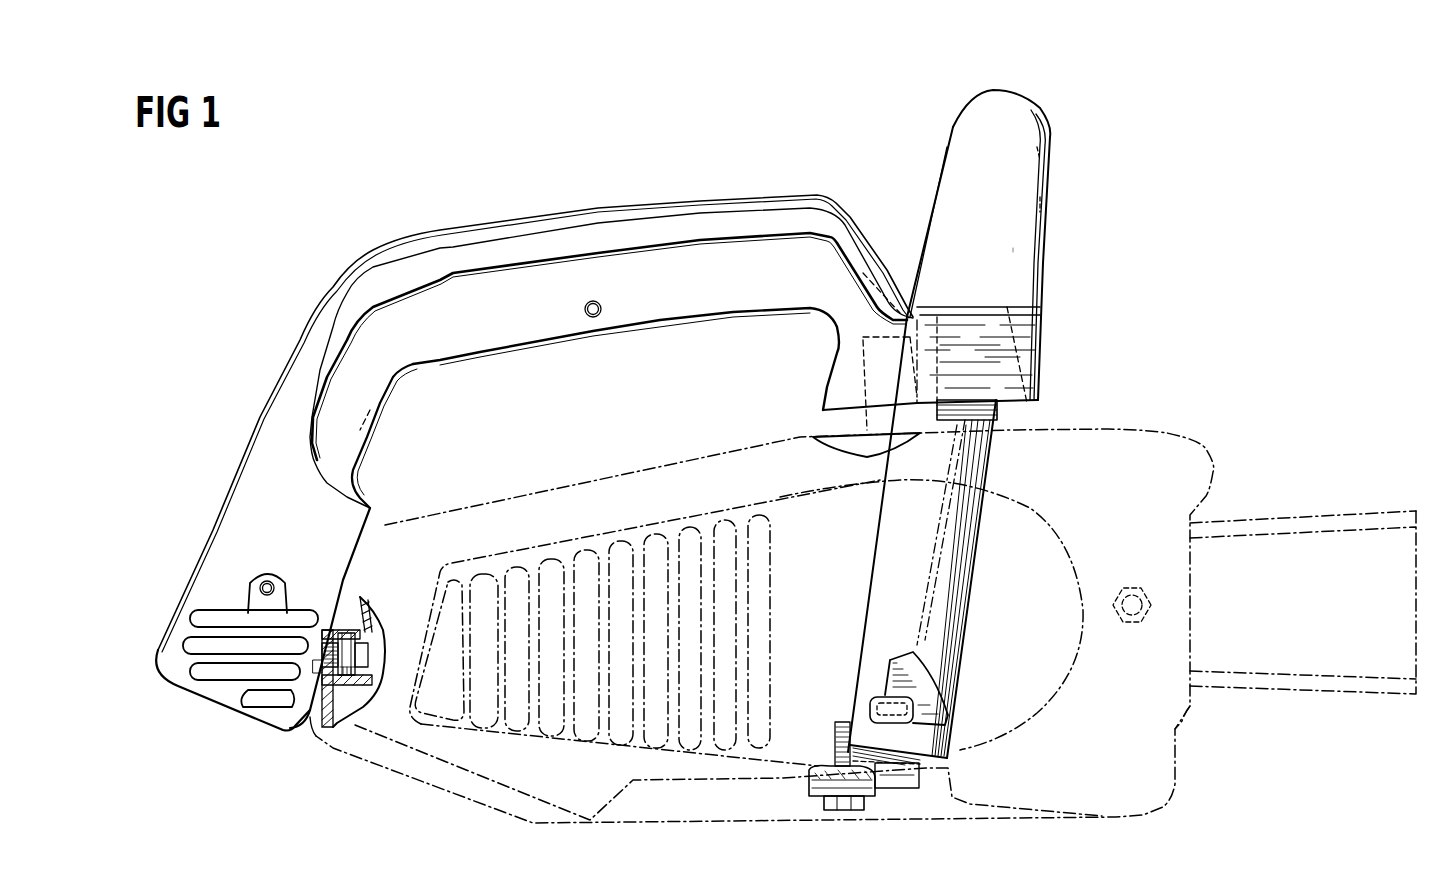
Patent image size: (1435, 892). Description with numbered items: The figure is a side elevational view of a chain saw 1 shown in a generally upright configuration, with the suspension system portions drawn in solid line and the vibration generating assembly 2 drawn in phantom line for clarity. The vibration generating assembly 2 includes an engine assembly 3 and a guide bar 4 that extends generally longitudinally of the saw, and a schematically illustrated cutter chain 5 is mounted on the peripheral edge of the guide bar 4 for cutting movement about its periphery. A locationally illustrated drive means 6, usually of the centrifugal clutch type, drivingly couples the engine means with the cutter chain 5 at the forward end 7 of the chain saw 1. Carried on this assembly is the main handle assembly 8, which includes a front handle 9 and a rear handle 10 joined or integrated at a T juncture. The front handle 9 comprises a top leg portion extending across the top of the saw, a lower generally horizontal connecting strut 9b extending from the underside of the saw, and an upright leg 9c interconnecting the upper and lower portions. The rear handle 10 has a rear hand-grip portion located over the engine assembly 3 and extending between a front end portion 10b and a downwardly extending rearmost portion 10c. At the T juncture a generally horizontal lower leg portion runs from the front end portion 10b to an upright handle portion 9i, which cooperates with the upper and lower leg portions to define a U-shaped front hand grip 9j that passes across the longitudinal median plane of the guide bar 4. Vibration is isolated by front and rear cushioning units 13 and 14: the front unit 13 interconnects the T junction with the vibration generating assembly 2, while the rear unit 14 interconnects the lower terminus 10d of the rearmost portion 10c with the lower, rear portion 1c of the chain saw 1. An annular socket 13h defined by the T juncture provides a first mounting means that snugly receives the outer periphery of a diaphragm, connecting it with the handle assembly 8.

The chain saw 1 is at (1065, 201).
The lower rear portion of chain saw 1c is at (320, 713).
The vibration generating assembly 2 is at (1101, 429).
The engine assembly 3 is at (511, 724).
The guide bar 4 is at (1275, 608).
The cutter chain 5 is at (1280, 523).
The drive means 6 is at (1005, 682).
The forward end of chain saw 7 is at (1194, 702).
The main handle assembly 8 is at (1040, 324).
The front handle 9 is at (1047, 132).
The lower connecting strut 9b is at (883, 792).
The upright leg 9c is at (985, 470).
The upright handle portion 9i is at (1013, 250).
The front hand grip 9j is at (957, 127).
The rear handle 10 is at (658, 205).
The front end portion of rear handle 10b is at (907, 317).
The rearmost portion of rear handle 10c is at (373, 427).
The lower terminus of rear handle portion 10d is at (217, 690).
The front cushioning unit 13 is at (980, 370).
The annular socket 13h is at (997, 403).
The rear cushioning unit 14 is at (313, 675).